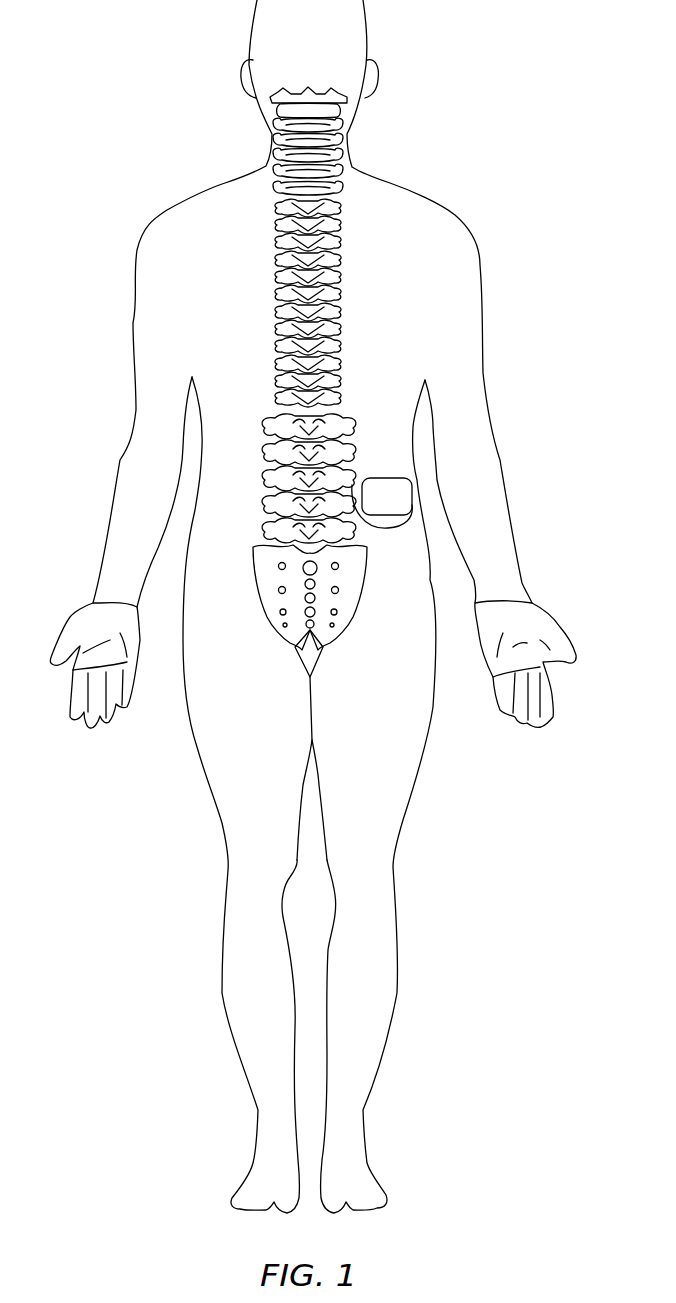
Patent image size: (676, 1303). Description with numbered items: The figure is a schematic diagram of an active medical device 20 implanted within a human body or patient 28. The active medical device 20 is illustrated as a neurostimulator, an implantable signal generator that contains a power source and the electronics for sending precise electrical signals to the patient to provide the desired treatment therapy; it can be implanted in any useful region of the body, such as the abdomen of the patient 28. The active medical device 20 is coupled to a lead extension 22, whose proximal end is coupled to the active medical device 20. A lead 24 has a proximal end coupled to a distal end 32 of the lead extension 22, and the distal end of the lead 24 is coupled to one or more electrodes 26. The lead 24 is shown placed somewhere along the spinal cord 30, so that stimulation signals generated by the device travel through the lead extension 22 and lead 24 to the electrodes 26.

The active medical device 20 is at (388, 500).
The lead extension 22 is at (407, 527).
The lead 24 is at (350, 423).
The electrodes 26 is at (340, 367).
The patient 28 is at (427, 200).
The spinal cord 30 is at (340, 327).
The distal end of the lead extension 32 is at (353, 462).